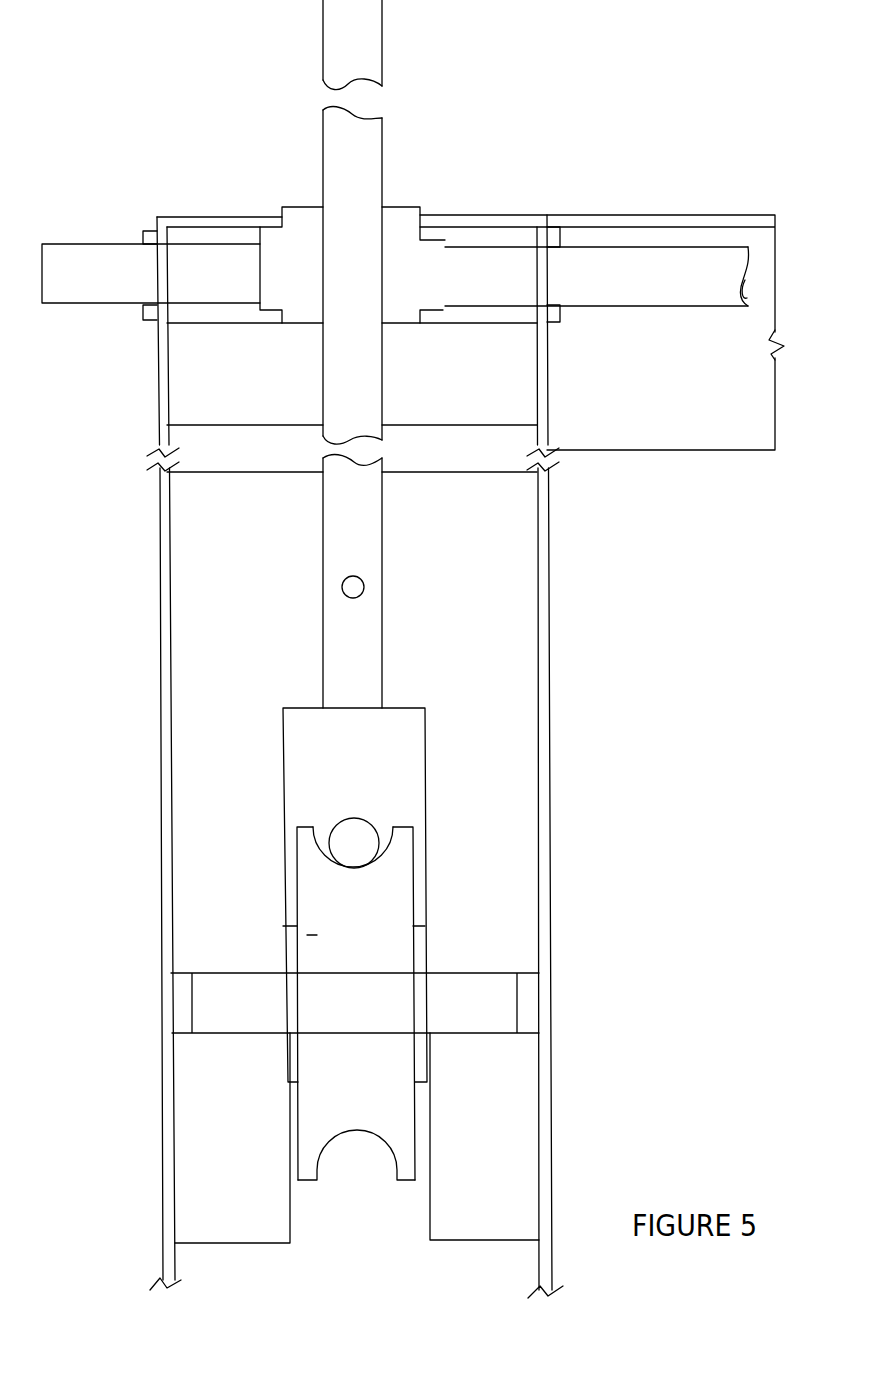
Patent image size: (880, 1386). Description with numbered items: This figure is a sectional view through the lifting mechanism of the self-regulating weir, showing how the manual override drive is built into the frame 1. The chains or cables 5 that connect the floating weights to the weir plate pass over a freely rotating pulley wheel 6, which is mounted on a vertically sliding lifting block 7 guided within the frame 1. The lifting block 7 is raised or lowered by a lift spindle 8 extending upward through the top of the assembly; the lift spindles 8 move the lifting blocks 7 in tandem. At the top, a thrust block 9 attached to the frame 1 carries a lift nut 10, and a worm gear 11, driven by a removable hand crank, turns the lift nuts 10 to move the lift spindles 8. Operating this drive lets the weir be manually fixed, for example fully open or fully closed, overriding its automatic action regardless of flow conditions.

The frame 1 is at (672, 396).
The chains or cables 5 is at (350, 842).
The pulley wheels 6 is at (352, 918).
The lifting blocks 7 is at (225, 947).
The lift spindles 8 is at (348, 527).
The thrust blocks 9 is at (208, 372).
The lift nuts 10 is at (398, 230).
The worm gear 11 is at (458, 265).